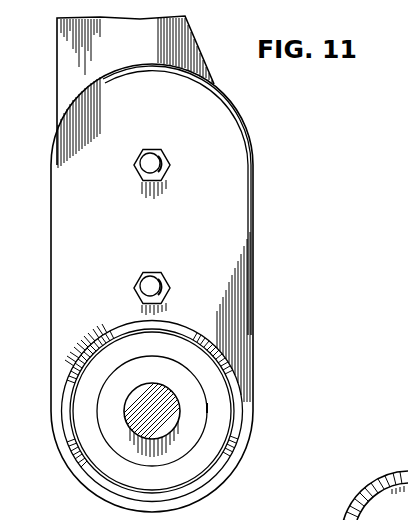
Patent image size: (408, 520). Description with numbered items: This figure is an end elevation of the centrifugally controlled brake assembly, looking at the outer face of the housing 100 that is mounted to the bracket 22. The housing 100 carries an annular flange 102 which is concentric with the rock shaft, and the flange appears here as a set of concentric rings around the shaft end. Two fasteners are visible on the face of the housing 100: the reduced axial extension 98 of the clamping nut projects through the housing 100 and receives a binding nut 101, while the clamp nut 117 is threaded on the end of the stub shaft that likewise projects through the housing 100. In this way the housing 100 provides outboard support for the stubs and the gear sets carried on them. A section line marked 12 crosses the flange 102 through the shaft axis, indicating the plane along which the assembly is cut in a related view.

The bracket 22 is at (203, 55).
The housing 100 is at (238, 213).
The reduced axial extension 98 is at (153, 160).
The binding nut 101 is at (170, 183).
The clamp nut 117 is at (162, 281).
The annular flange 102 is at (217, 345).
The section line 12 is at (38, 408).